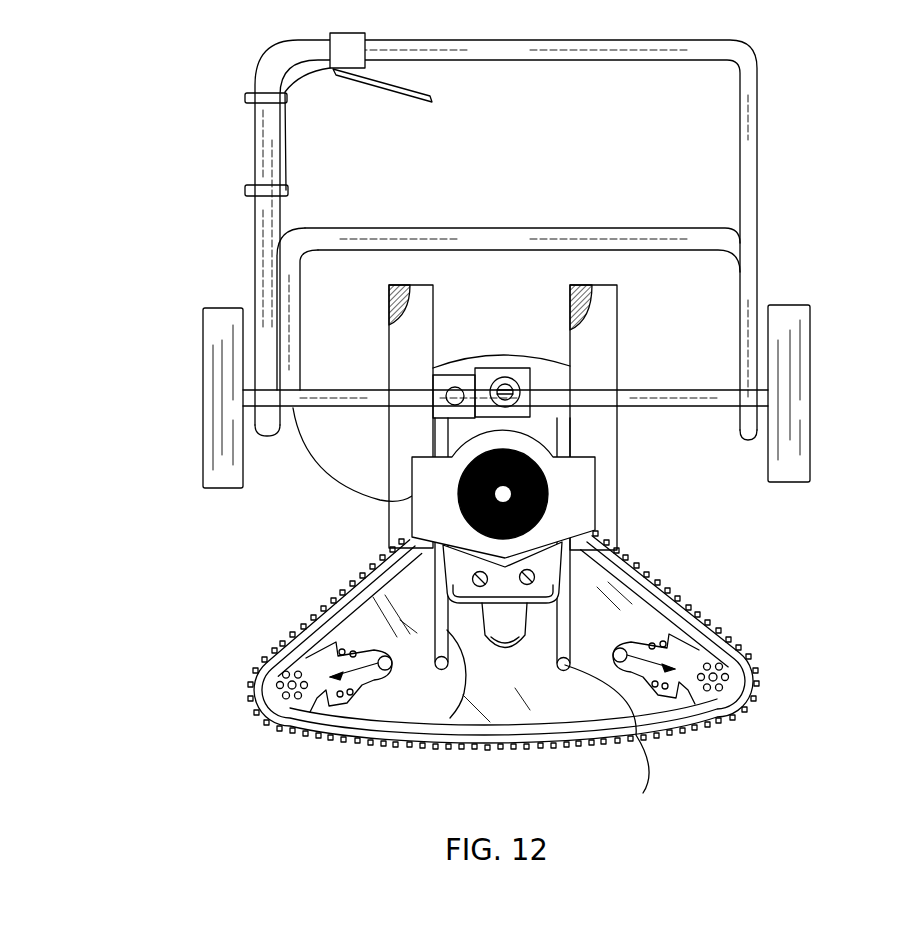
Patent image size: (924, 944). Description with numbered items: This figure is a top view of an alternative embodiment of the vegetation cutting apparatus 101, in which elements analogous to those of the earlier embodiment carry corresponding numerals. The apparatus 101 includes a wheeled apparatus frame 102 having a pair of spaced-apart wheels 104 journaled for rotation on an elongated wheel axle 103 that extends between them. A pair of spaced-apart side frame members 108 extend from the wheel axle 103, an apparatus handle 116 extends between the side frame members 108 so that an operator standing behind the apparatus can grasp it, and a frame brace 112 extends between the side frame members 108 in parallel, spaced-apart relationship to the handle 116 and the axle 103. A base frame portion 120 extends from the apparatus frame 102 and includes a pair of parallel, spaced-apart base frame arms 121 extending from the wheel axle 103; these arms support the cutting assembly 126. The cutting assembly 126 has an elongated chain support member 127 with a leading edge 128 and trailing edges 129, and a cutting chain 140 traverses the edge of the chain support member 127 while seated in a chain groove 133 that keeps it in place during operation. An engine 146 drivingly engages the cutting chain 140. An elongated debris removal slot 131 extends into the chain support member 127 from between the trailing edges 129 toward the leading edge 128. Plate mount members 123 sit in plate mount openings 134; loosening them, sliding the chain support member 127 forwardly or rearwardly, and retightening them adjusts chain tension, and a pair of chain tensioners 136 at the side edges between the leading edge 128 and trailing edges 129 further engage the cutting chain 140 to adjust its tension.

The vegetation cutting apparatus 101 is at (166, 102).
The apparatus frame 102 is at (244, 235).
The wheel axle 103 is at (664, 394).
The wheels 104 is at (218, 467).
The side frame members 108 is at (755, 178).
The frame brace 112 is at (513, 230).
The apparatus handle 116 is at (533, 62).
The base frame portion 120 is at (364, 522).
The base frame arms 121 is at (590, 304).
The plate mount members 123 is at (655, 737).
The cutting assembly 126 is at (224, 670).
The chain support member 127 is at (310, 607).
The leading edge 128 is at (607, 742).
The trailing edges 129 is at (330, 603).
The debris removal slot 131 is at (527, 617).
The chain groove 133 is at (517, 752).
The plate mount opening 134 is at (468, 690).
The chain tensioner 136 is at (280, 688).
The cutting chain 140 is at (405, 755).
The engine 146 is at (570, 512).